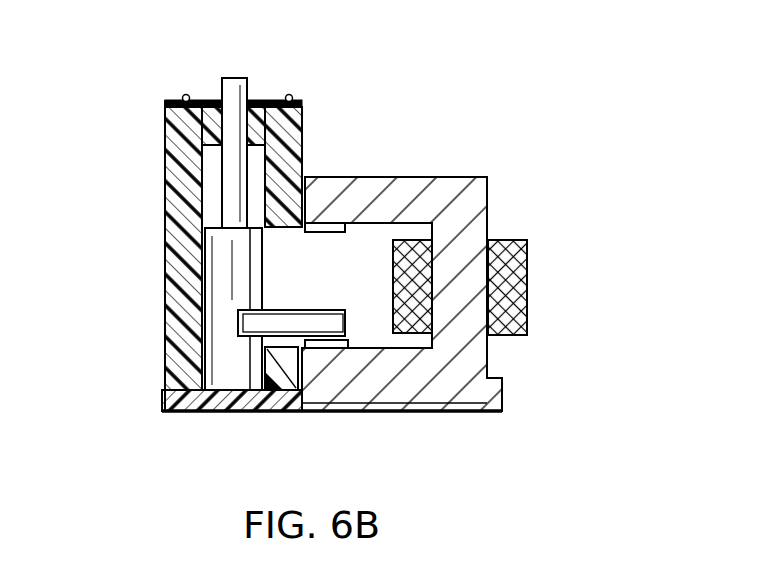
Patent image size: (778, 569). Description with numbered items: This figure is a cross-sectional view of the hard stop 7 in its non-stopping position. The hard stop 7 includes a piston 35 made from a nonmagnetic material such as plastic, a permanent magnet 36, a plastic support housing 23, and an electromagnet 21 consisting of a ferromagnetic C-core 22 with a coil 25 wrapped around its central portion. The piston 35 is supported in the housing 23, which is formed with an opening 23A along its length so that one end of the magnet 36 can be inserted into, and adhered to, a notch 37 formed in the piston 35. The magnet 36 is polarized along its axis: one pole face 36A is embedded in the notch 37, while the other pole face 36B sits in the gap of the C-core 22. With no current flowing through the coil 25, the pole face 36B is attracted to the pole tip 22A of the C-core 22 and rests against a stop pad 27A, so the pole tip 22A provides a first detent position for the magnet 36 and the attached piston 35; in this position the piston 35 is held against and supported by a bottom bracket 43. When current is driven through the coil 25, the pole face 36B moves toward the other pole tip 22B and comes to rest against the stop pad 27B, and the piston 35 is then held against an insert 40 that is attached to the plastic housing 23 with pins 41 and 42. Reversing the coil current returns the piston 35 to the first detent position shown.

The hard stop 7 is at (106, 243).
The electromagnet 21 is at (510, 188).
The ferromagnetic C-core 22 is at (443, 180).
The pole tip 22A is at (320, 377).
The pole tip 22B is at (337, 187).
The plastic support housing 23 is at (307, 137).
The opening 23A is at (267, 271).
The coil 25 is at (534, 279).
The stop pad 27A is at (346, 348).
The stop pad 27B is at (327, 233).
The piston 35 is at (258, 81).
The permanent magnet 36 is at (303, 327).
The pole face 36A is at (238, 317).
The pole face 36B is at (347, 323).
The notch 37 is at (276, 300).
The insert 40 is at (203, 97).
The pin 41 is at (289, 95).
The pin 42 is at (186, 94).
The bottom bracket 43 is at (227, 402).